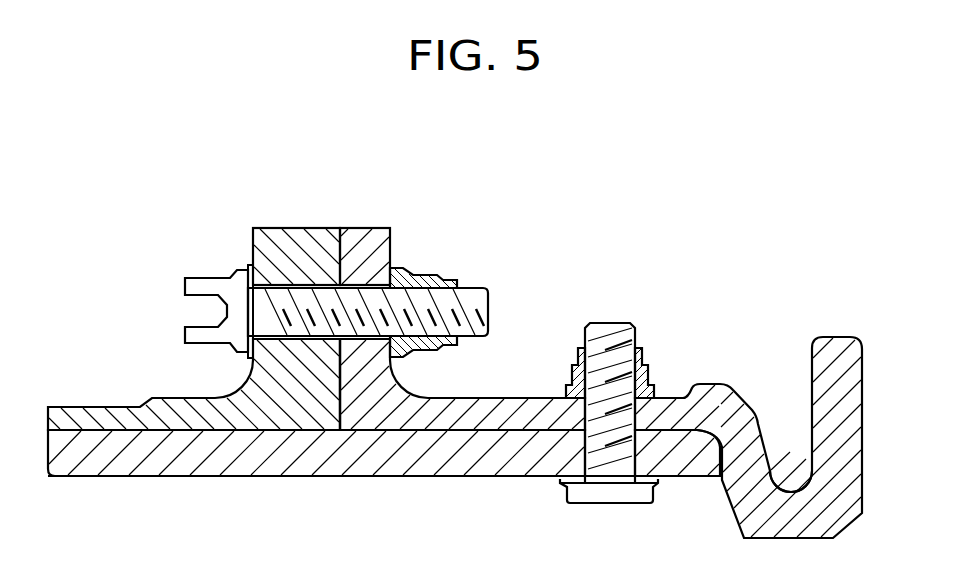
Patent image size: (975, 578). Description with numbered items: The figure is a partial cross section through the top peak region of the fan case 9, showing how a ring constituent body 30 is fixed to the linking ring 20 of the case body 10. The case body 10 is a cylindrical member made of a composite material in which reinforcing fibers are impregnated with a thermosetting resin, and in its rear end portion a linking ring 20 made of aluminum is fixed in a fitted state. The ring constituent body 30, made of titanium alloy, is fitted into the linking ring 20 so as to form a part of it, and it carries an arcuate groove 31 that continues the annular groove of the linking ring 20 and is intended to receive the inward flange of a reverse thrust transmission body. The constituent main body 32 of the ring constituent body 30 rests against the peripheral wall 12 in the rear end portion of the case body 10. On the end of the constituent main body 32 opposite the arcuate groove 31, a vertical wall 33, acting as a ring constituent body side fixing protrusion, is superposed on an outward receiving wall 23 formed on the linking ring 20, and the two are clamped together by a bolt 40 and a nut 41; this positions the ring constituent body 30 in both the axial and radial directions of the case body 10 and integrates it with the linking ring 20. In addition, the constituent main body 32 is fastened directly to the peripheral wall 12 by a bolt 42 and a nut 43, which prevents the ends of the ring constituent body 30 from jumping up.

The fan case 9 is at (354, 200).
The case body 10 is at (203, 480).
The peripheral wall 12 is at (484, 462).
The linking ring 20 is at (97, 407).
The outward receiving wall 23 is at (300, 240).
The ring constituent body 30 is at (863, 387).
The arcuate groove 31 is at (795, 490).
The constituent main body 32 is at (522, 420).
The vertical wall 33 is at (367, 345).
The bolt 40 is at (205, 280).
The nut 41 is at (423, 272).
The bolt 42 is at (610, 492).
The nut 43 is at (660, 372).